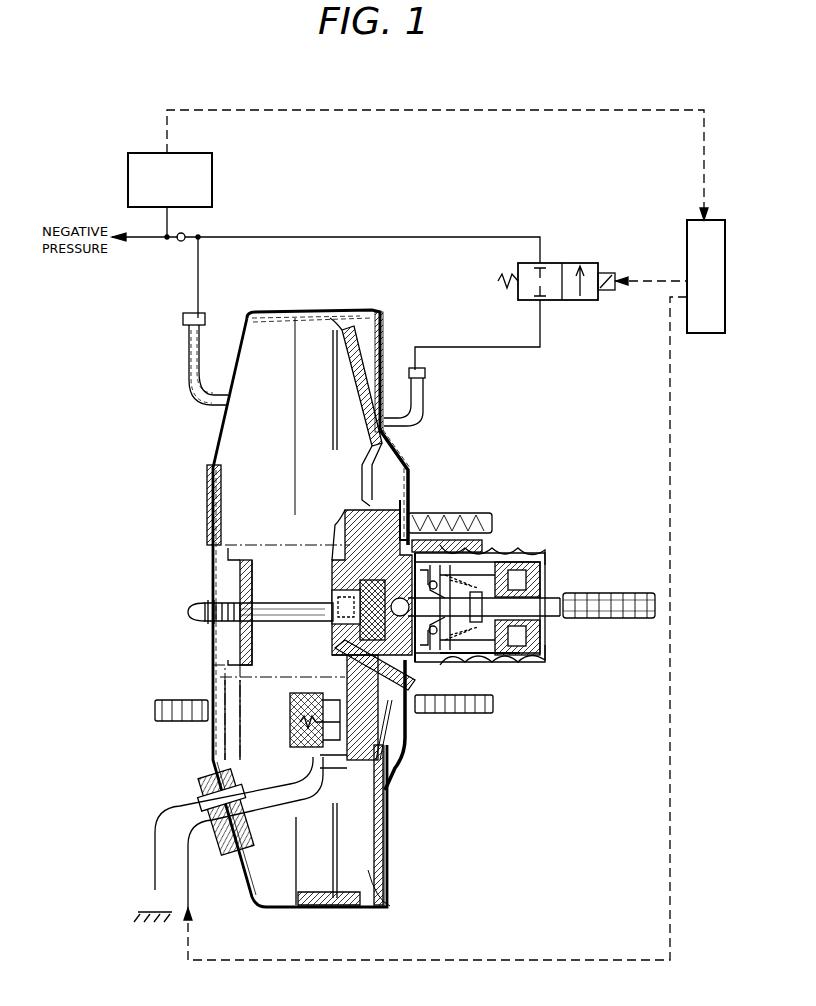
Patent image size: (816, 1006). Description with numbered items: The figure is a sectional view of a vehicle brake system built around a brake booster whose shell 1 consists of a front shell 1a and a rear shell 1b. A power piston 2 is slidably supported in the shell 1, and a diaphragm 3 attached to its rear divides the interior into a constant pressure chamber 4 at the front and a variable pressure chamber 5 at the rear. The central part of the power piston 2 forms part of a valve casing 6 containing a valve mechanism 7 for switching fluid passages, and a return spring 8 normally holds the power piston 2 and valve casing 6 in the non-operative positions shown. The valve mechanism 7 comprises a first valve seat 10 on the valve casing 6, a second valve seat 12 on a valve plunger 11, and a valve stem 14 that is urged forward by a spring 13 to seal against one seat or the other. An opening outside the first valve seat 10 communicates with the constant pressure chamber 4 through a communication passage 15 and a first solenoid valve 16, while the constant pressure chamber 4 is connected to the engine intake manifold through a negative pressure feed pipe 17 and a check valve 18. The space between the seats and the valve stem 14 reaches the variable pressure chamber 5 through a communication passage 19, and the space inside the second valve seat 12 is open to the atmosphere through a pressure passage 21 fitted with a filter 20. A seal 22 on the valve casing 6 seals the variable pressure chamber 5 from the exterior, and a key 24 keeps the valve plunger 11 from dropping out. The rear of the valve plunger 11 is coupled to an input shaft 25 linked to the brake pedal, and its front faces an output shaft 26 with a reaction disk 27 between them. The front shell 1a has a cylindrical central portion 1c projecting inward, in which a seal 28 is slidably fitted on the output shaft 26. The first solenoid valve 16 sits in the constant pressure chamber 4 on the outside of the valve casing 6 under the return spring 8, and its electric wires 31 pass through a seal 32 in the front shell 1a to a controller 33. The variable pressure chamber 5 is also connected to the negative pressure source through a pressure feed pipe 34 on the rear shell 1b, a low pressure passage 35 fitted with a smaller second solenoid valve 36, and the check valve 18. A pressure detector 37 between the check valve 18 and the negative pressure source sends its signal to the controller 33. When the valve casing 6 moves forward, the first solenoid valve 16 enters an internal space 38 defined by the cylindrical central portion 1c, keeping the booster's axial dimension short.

The shell 1 is at (268, 925).
The front shell 1a is at (246, 888).
The rear shell 1b is at (372, 857).
The cylindrical central portion 1c is at (240, 700).
The power piston 2 is at (372, 800).
The diaphragm 3 is at (316, 870).
The constant pressure chamber 4 is at (262, 756).
The variable pressure chamber 5 is at (398, 757).
The valve casing 6 is at (348, 664).
The valve mechanism 7 is at (455, 715).
The return spring 8 is at (270, 538).
The first valve seat 10 is at (430, 555).
The valve plunger 11 is at (358, 574).
The second valve seat 12 is at (495, 555).
The spring 13 is at (522, 548).
The valve stem 14 is at (445, 565).
The communication passage 15 is at (330, 668).
The first solenoid valve 16 is at (315, 748).
The negative pressure feed pipe 17 is at (178, 418).
The check valve 18 is at (176, 242).
The communication passage 19 is at (405, 505).
The filter 20 is at (528, 665).
The pressure passage 21 is at (505, 668).
The seal 22 is at (470, 522).
The key 24 is at (330, 512).
The input shaft 25 is at (615, 620).
The output shaft 26 is at (186, 612).
The reaction disk 27 is at (330, 585).
The seal 28 is at (236, 582).
The electric wires 31 is at (262, 800).
The seal 32 is at (200, 800).
The controller 33 is at (712, 338).
The pressure feed pipe 34 is at (428, 418).
The low pressure passage 35 is at (360, 238).
The second solenoid valve 36 is at (572, 308).
The pressure detector 37 is at (214, 176).
The internal space 38 is at (212, 690).